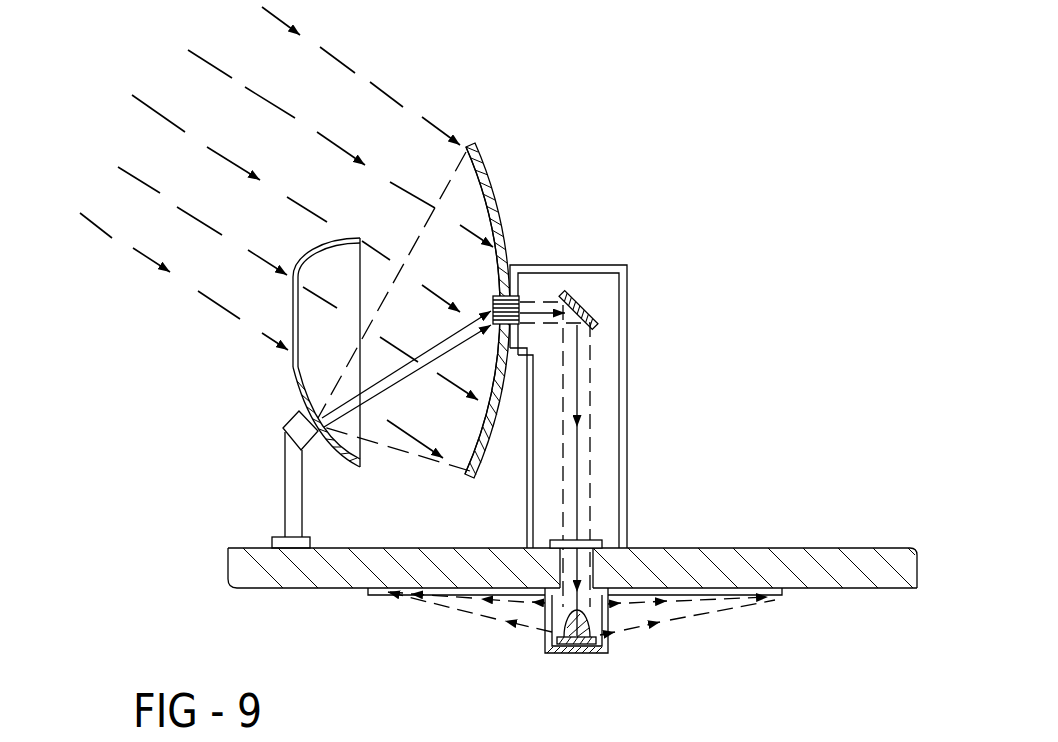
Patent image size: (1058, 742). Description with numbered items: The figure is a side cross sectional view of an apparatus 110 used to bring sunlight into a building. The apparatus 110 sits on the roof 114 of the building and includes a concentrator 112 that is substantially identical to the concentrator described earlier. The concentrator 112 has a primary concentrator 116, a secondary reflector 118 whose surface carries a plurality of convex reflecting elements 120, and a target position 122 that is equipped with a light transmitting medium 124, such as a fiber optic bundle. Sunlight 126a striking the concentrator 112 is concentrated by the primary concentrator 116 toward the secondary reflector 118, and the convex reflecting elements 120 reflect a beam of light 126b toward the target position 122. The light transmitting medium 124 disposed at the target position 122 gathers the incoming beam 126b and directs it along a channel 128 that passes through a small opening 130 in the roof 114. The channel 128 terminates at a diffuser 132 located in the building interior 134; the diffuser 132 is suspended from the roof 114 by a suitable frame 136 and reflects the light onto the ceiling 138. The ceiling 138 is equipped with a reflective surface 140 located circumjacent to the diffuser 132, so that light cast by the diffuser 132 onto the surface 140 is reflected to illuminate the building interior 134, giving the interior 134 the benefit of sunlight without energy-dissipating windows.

The apparatus 110 is at (645, 122).
The concentrator 112 is at (508, 226).
The roof 114 is at (748, 548).
The primary concentrator 116 is at (484, 163).
The secondary reflector 118 is at (293, 367).
The convex reflecting elements 120 is at (342, 448).
The target position 122 is at (516, 325).
The light transmitting medium 124 is at (539, 310).
The sunlight 126a is at (338, 58).
The beam of light 126b is at (407, 362).
The channel 128 is at (610, 402).
The small opening 130 is at (588, 548).
The diffuser 132 is at (581, 637).
The building interior 134 is at (806, 650).
The frame 136 is at (545, 618).
The ceiling 138 is at (273, 587).
The reflective surface 140 is at (392, 592).